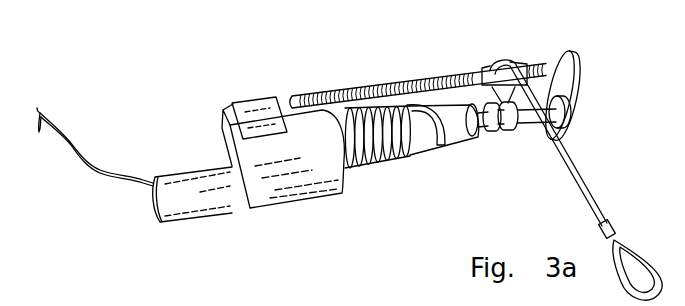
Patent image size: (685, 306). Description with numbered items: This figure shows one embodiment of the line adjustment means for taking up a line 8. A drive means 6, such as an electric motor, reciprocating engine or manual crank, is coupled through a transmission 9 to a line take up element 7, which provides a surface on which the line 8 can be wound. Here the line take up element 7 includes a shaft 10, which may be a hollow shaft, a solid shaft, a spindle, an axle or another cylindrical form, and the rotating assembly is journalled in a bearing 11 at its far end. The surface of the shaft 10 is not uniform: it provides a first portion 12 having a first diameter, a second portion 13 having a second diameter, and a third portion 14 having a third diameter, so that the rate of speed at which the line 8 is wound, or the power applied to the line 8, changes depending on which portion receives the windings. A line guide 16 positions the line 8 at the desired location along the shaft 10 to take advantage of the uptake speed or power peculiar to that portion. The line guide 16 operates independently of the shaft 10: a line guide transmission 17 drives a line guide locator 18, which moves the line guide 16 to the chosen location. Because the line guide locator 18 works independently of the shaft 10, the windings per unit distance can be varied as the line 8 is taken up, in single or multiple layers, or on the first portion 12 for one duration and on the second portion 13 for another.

The drive means 6 is at (193, 187).
The line take up element 7 is at (530, 125).
The line 8 is at (583, 175).
The transmission 9 is at (276, 180).
The shaft 10 is at (420, 157).
The bearing 11 is at (570, 80).
The first portion 12 is at (390, 168).
The second portion 13 is at (472, 142).
The third portion 14 is at (510, 136).
The line guide 16 is at (492, 68).
The line guide transmission 17 is at (243, 105).
The line guide locator 18 is at (328, 90).